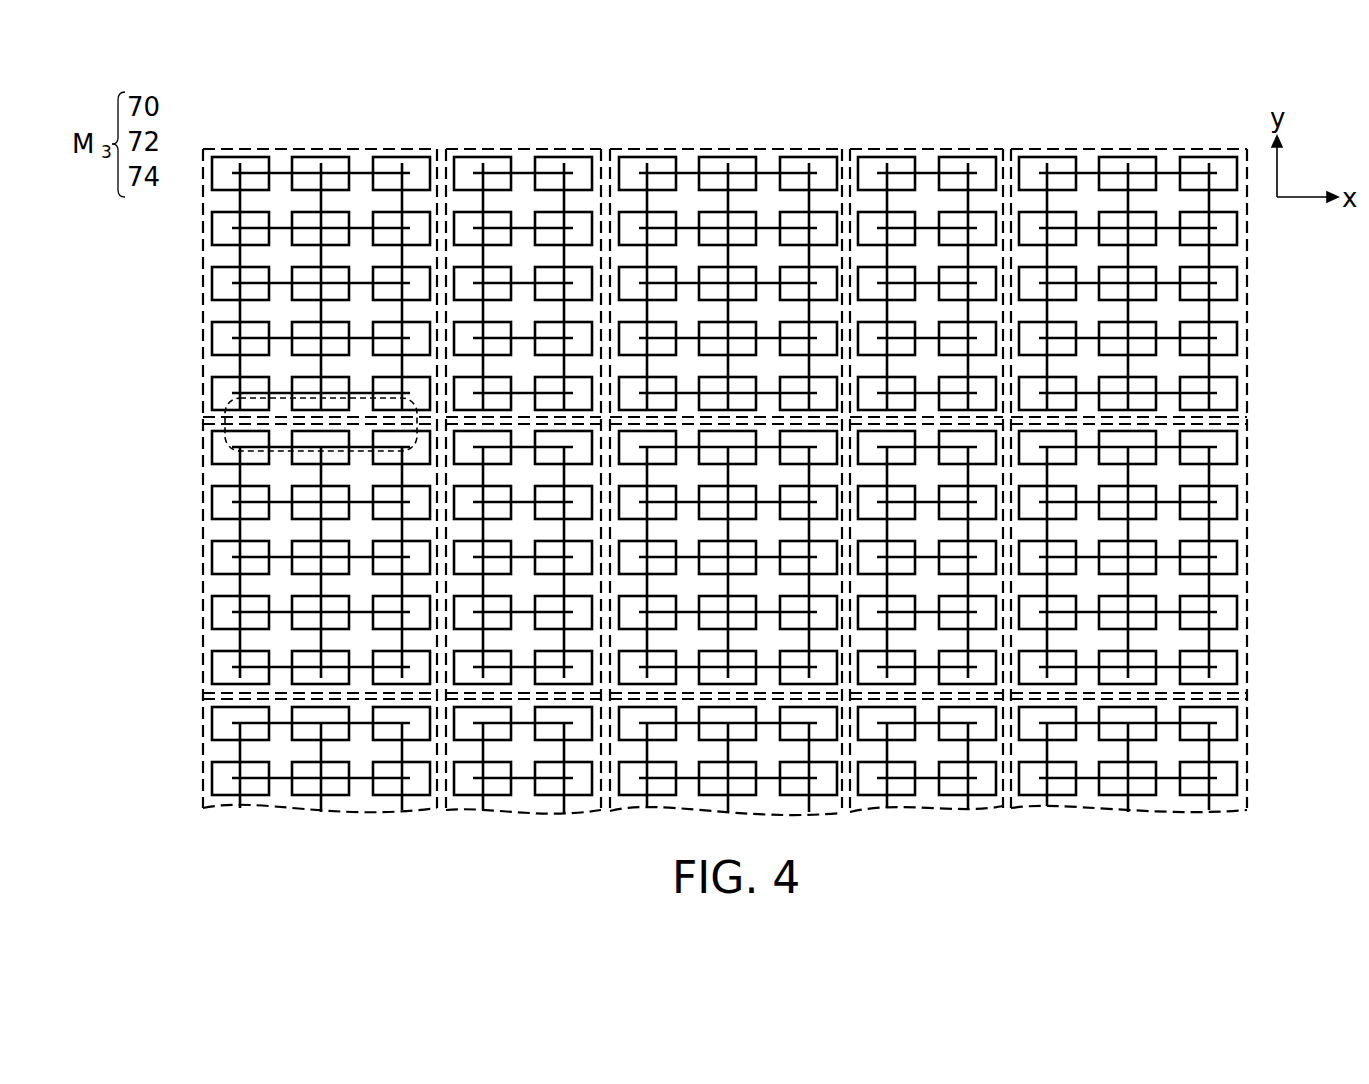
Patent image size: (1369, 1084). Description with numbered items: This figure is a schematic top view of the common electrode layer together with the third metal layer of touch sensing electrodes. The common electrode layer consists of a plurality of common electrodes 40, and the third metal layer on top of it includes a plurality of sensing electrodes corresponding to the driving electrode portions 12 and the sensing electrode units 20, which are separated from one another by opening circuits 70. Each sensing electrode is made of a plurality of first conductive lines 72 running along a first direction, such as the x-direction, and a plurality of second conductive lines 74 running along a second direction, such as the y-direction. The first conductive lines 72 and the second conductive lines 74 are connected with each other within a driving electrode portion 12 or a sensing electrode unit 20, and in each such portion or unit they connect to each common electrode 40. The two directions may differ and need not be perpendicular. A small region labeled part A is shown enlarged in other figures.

The driving electrode portion 12 is at (236, 147).
The sensing electrode unit 20 is at (516, 147).
The common electrode 40 is at (458, 150).
The opening circuit 70 is at (203, 418).
The first conductive line 72 is at (233, 283).
The second conductive line 74 is at (400, 163).
The part A is at (228, 404).